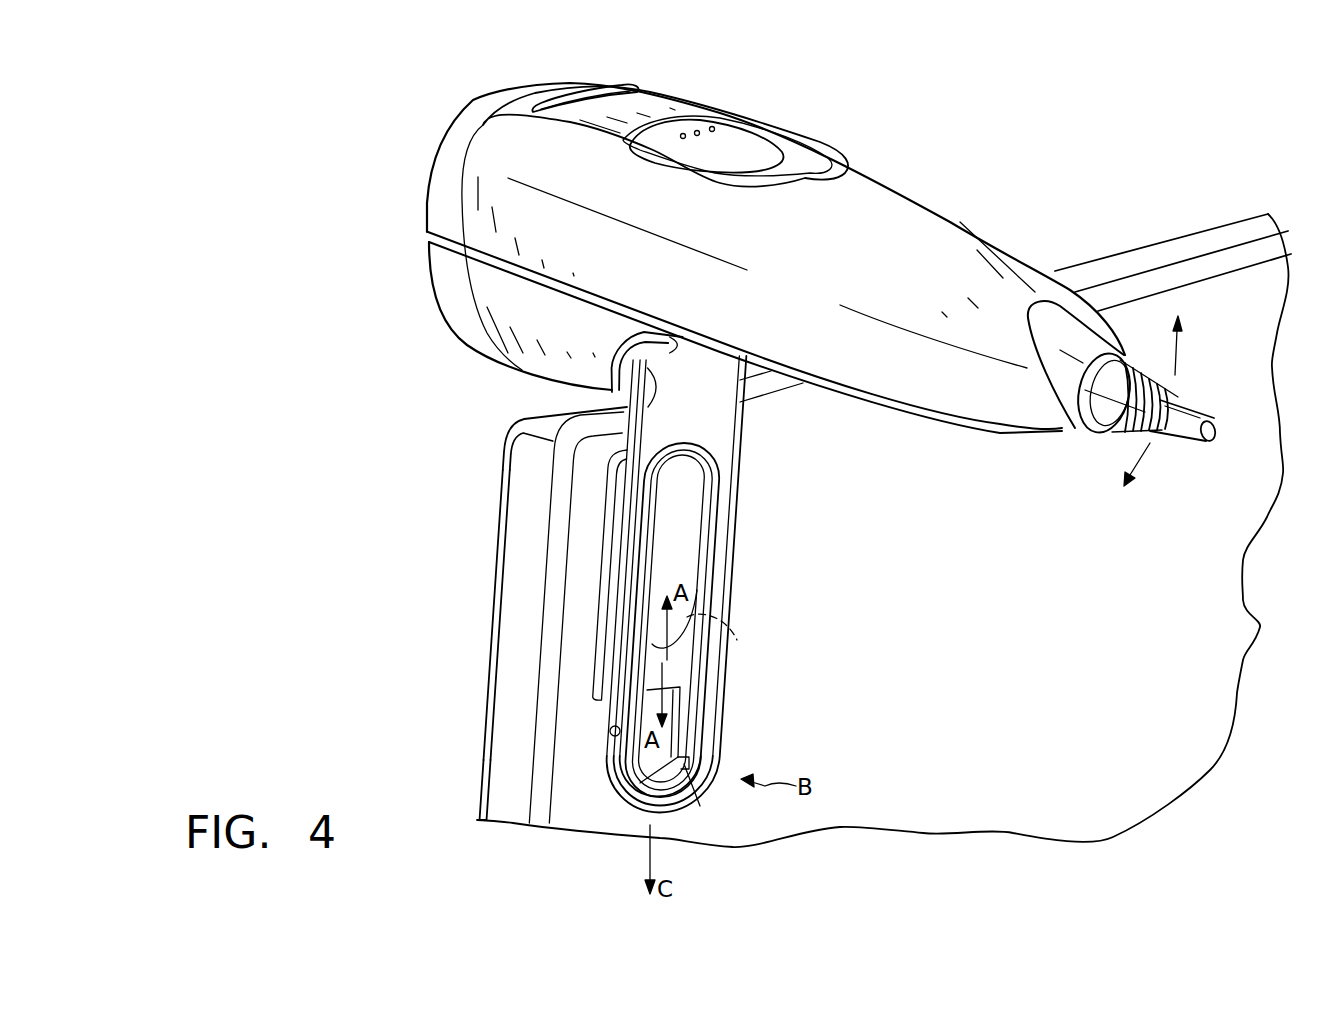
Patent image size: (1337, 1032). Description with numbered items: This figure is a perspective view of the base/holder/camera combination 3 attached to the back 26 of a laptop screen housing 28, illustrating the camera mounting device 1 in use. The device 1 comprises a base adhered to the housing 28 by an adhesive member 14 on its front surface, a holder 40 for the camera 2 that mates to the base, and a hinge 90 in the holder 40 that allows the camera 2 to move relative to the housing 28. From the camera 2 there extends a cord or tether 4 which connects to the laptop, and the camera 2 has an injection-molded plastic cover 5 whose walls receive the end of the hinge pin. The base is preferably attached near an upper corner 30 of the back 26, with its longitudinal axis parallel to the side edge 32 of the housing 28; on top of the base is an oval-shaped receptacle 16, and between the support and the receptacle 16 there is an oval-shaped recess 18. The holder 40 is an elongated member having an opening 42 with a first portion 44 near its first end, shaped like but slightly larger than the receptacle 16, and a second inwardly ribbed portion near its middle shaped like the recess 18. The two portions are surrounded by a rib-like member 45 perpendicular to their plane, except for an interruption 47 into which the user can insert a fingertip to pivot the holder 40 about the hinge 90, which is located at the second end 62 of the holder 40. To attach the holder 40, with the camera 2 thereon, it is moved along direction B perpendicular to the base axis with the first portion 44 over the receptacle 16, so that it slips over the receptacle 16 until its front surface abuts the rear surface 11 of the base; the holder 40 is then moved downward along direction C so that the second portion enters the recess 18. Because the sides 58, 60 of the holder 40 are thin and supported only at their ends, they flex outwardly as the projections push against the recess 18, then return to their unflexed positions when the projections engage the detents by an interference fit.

The camera mounting device 1 is at (538, 622).
The camera 2 is at (922, 156).
The base/holder/camera combination 3 is at (430, 103).
The cord or tether 4 is at (1210, 414).
The camera cover 5 is at (480, 280).
The rear surface 11 is at (693, 707).
The adhesive member 14 is at (595, 645).
The receptacle 16 is at (698, 490).
The recess 18 is at (737, 640).
The back 26 is at (1242, 655).
The laptop screen housing 28 is at (510, 565).
The upper corner 30 is at (527, 445).
The side edge 32 is at (497, 760).
The holder 40 is at (732, 445).
The opening 42 is at (690, 748).
The first portion 44 is at (690, 783).
The rib-like member 45 is at (673, 672).
The interruption 47 is at (700, 806).
The side 58 is at (630, 473).
The side 60 is at (736, 585).
The second end 62 is at (612, 390).
The hinge 90 is at (708, 360).